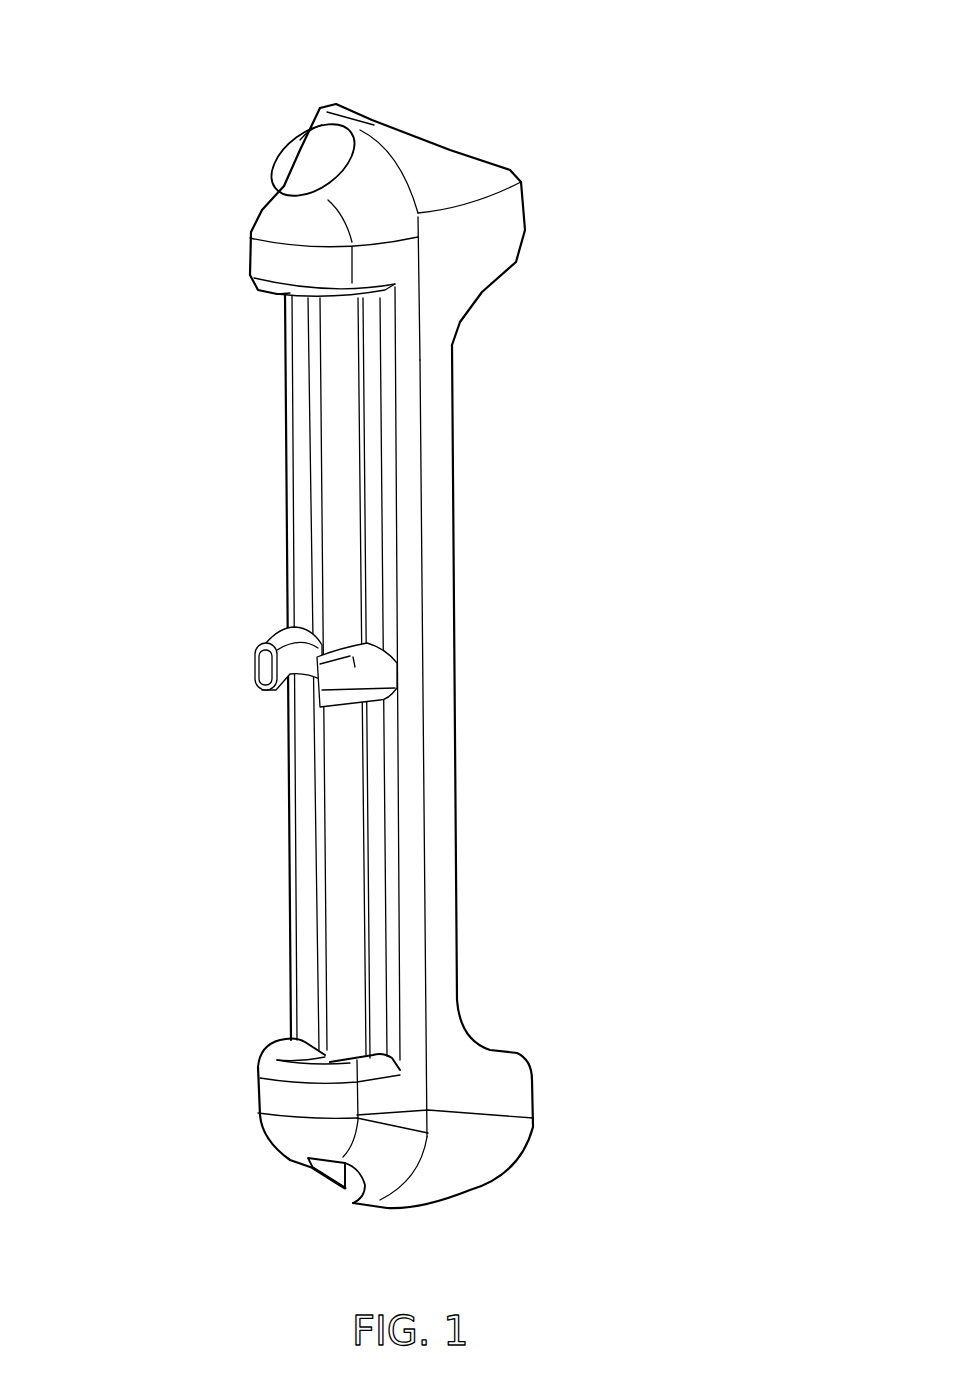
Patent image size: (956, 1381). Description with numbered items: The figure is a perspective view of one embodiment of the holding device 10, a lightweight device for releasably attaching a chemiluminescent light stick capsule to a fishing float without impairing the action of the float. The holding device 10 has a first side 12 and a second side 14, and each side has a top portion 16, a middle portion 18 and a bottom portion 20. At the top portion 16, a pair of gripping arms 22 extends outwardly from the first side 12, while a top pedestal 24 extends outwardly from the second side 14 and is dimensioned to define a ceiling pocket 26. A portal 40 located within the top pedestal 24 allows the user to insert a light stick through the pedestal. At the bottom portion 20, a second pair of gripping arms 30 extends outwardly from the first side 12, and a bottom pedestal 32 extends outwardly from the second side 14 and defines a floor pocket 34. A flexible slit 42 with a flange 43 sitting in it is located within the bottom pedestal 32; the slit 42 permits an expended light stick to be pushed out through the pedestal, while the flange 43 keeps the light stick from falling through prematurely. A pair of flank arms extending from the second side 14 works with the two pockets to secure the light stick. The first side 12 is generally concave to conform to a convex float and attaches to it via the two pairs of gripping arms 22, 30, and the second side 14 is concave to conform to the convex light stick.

The holding device 10 is at (446, 647).
The first side 12 is at (640, 572).
The second side 14 is at (242, 676).
The top portion 16 is at (388, 180).
The middle portion 18 is at (506, 640).
The bottom portion 20 is at (394, 1148).
The gripping arms 22 is at (523, 183).
The top pedestal 24 is at (257, 256).
The ceiling pocket 26 is at (283, 297).
The gripping arms 30 is at (530, 1087).
The bottom pedestal 32 is at (258, 1087).
The floor pocket 34 is at (340, 1057).
The portal 40 is at (297, 177).
The flexible slit 42 is at (352, 1193).
The flange 43 is at (335, 1190).